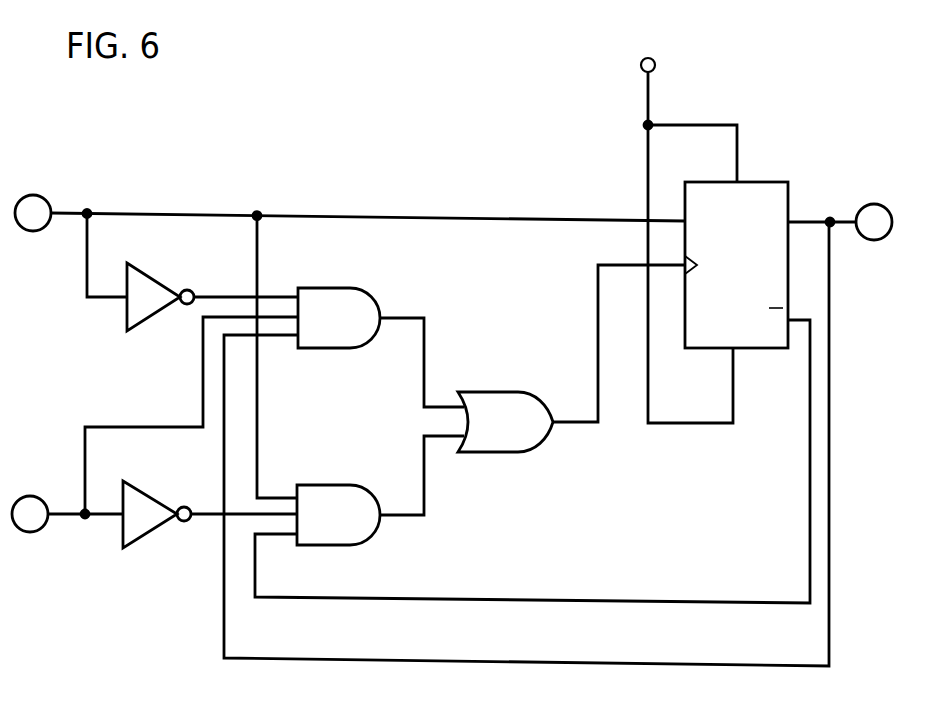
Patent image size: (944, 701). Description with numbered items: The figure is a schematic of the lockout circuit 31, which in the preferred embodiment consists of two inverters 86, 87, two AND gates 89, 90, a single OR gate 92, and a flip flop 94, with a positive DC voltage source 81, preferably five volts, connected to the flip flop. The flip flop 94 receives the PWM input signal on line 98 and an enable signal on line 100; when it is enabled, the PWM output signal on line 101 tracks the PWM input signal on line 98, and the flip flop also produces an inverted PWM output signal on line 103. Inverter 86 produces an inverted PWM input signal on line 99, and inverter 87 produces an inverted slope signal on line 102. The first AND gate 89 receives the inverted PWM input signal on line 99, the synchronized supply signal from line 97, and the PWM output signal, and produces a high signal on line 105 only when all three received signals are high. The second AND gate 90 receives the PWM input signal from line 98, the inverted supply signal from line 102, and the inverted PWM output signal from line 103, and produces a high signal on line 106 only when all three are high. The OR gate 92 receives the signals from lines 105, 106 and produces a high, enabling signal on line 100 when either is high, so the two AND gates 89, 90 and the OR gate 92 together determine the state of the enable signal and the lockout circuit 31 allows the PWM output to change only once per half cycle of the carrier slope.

The lockout circuit 31 is at (393, 189).
The positive DC voltage source 81 is at (650, 98).
The inverter 86 is at (123, 312).
The inverter 87 is at (120, 527).
The first AND gate 89 is at (323, 287).
The second AND gate 90 is at (318, 485).
The OR gate 92 is at (478, 391).
The flip flop 94 is at (791, 190).
The line 97 is at (30, 496).
The line 98 is at (33, 195).
The line 99 is at (210, 294).
The line 100 is at (600, 413).
The line 101 is at (846, 218).
The line 102 is at (210, 518).
The line 103 is at (603, 601).
The line 105 is at (425, 355).
The line 106 is at (410, 518).